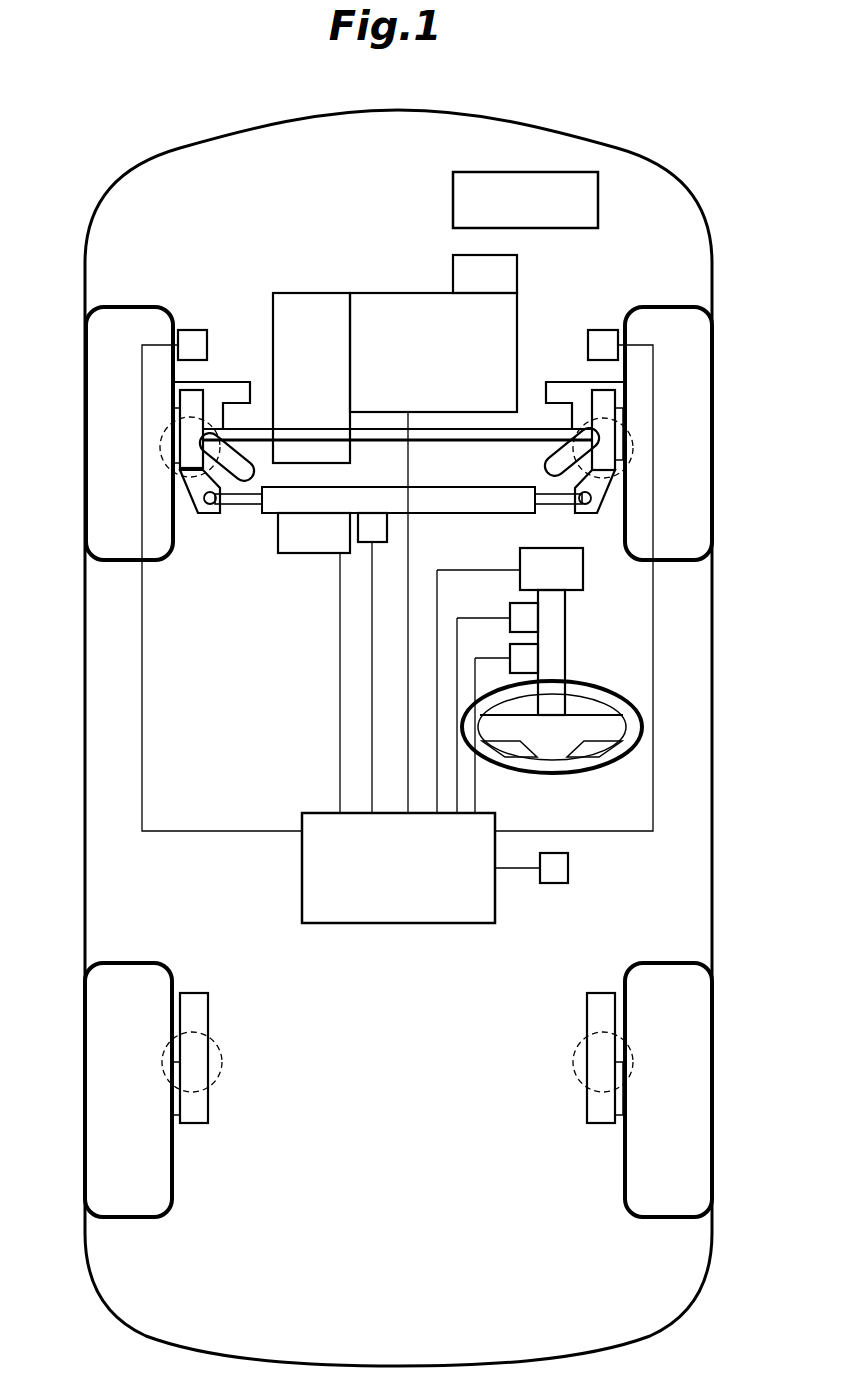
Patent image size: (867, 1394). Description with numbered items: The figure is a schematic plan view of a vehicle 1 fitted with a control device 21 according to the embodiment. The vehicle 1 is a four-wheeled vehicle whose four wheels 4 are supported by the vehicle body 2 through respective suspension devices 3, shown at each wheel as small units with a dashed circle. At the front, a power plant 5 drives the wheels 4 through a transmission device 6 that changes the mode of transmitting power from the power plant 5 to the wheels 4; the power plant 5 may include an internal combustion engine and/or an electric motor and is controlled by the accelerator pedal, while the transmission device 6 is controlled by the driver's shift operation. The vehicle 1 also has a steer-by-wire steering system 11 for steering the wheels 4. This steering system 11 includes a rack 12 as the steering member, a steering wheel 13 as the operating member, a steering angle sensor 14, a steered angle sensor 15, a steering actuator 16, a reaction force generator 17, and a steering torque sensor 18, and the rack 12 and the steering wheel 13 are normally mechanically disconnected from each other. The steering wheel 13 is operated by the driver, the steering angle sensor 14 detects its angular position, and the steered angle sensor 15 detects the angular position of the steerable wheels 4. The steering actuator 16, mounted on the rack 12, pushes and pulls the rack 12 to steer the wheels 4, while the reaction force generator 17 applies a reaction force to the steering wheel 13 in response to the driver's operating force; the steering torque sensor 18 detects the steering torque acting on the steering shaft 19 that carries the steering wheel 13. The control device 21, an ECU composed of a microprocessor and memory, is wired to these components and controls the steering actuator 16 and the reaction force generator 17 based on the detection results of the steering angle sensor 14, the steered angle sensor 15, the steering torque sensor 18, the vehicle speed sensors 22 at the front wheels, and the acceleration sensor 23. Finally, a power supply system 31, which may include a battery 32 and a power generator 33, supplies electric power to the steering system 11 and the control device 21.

The vehicle 1 is at (370, 724).
The vehicle body 2 is at (84, 265).
The suspension device 3 is at (233, 378).
The wheel 4 is at (126, 306).
The power plant 5 is at (367, 292).
The transmission device 6 is at (297, 292).
The steering system 11 is at (397, 534).
The rack 12 is at (446, 487).
The steering wheel 13 is at (550, 774).
The steering angle sensor 14 is at (539, 660).
The steered angle sensor 15 is at (367, 544).
The steering actuator 16 is at (277, 540).
The reaction force generator 17 is at (519, 565).
The steering torque sensor 18 is at (539, 618).
The steering shaft 19 is at (566, 646).
The control device 21 is at (435, 925).
The vehicle speed sensor 22 is at (196, 329).
The acceleration sensor 23 is at (569, 868).
The power supply system 31 is at (435, 300).
The battery 32 is at (515, 182).
The power generator 33 is at (452, 271).